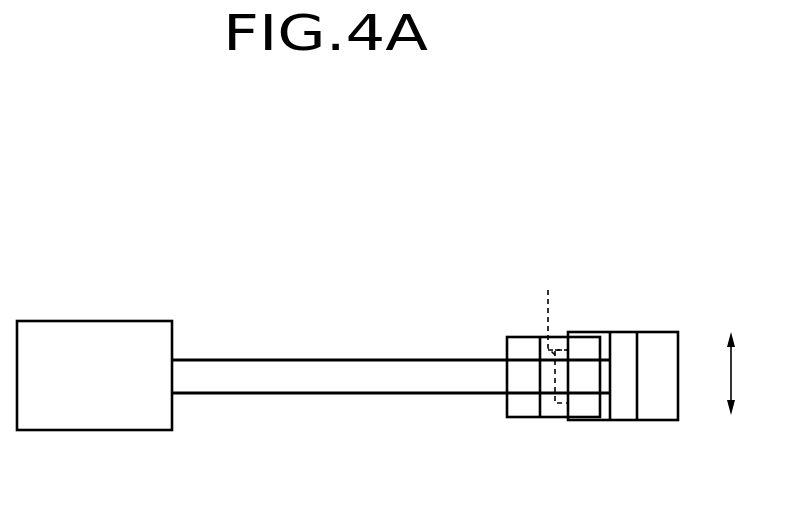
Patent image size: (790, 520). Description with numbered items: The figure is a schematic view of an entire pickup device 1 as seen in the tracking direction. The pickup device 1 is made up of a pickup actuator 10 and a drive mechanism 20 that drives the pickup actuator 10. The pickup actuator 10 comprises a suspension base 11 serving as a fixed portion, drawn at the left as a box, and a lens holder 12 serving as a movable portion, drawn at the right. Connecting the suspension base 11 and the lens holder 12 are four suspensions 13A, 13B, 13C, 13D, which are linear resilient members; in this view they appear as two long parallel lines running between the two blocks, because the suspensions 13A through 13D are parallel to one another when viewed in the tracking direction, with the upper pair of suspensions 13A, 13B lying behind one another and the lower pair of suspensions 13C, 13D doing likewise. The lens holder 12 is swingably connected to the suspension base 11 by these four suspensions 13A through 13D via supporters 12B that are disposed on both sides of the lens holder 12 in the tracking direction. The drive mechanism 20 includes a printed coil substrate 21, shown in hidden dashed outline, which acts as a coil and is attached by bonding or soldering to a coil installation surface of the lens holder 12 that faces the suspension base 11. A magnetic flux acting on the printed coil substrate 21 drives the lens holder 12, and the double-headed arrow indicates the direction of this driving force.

The pickup device 1 is at (563, 240).
The pickup actuator 10 is at (178, 429).
The suspension base 11 is at (100, 337).
The lens holder 12 is at (655, 343).
The supporters 12B is at (625, 402).
The suspension 13A is at (317, 358).
The suspension 13B is at (391, 329).
The suspension 13C is at (391, 421).
The suspension 13D is at (368, 393).
The drive mechanism 20 is at (586, 430).
The printed coil substrate 21 is at (551, 332).